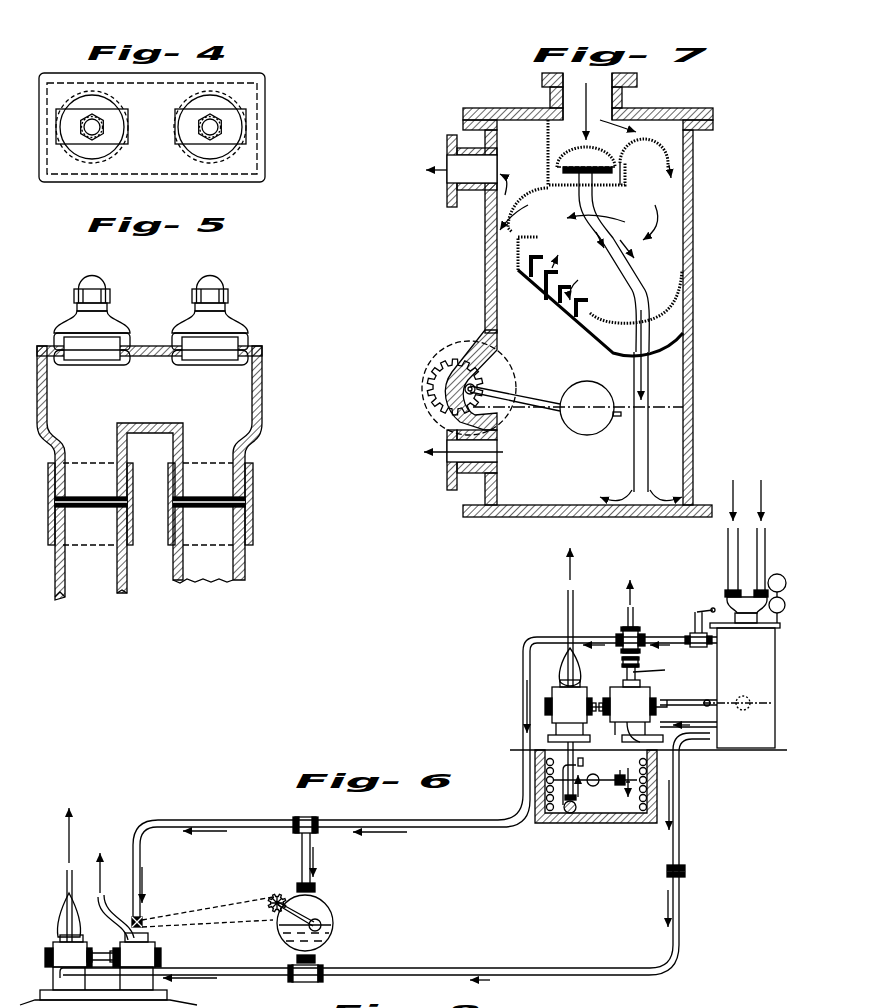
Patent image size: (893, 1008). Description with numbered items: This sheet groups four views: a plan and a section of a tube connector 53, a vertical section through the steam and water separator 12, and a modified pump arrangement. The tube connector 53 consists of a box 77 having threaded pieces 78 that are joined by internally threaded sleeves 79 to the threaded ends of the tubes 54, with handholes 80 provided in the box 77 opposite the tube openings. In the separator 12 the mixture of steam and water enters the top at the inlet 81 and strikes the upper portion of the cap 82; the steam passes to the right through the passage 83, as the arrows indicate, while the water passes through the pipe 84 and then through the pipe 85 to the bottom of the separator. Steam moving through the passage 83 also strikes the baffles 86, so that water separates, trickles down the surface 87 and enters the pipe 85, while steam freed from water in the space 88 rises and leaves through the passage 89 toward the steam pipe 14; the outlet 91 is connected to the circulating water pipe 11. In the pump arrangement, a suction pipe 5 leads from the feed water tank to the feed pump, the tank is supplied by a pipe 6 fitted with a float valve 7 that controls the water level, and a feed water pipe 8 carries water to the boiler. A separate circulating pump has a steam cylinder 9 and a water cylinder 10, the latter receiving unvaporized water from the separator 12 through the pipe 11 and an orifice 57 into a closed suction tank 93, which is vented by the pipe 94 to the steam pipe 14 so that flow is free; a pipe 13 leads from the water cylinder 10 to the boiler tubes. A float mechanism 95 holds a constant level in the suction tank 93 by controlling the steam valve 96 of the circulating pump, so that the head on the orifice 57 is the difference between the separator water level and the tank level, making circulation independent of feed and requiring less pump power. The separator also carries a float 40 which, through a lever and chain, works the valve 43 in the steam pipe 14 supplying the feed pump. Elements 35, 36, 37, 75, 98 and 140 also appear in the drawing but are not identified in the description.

In FIG. 6, the suction pipe 5 is at (570, 811).
In FIG. 6, the pipe 6 is at (665, 728).
In FIG. 6, the float valve 7 is at (606, 773).
In FIG. 6, the feed water pipe 8 is at (568, 617).
In FIG. 6, the steam cylinder 9 is at (147, 958).
In FIG. 6, the water cylinder 10 is at (53, 941).
In FIG. 6, the pipe 11 is at (385, 856).
In FIG. 7, the steam and water separator 12 is at (693, 261).
In FIG. 6, the steam and water separator 12 is at (744, 661).
In FIG. 6, the pipe 13 is at (67, 888).
In FIG. 6, the steam pipe 14 is at (484, 805).
In FIG. 6, the valve 35 is at (703, 607).
In FIG. 6, the valve 36 is at (634, 612).
In FIG. 6, the pipe 37 is at (762, 560).
In FIG. 6, the float 40 is at (751, 692).
In FIG. 6, the valve 43 is at (640, 663).
In FIG. 5, the tube connector 53 is at (166, 473).
In FIG. 5, the tubes 54 is at (175, 562).
In FIG. 6, the orifice 57 is at (686, 866).
In FIG. 6, the pipe 75 is at (728, 558).
In FIG. 5, the box 77 is at (149, 486).
In FIG. 5, the threaded pieces 78 is at (50, 477).
In FIG. 5, the internally threaded sleeves 79 is at (58, 517).
In FIG. 4, the handholes 80 is at (222, 130).
In FIG. 5, the handholes 80 is at (70, 342).
In FIG. 7, the top inlet 81 is at (573, 90).
In FIG. 7, the cap 82 is at (586, 152).
In FIG. 4, the passage 83 is at (258, 173).
In FIG. 7, the passage 83 is at (660, 143).
In FIG. 7, the pipe 84 is at (590, 219).
In FIG. 7, the pipe 85 is at (642, 378).
In FIG. 7, the baffles 86 is at (550, 272).
In FIG. 7, the surface 87 is at (540, 308).
In FIG. 7, the space 88 is at (634, 322).
In FIG. 7, the passage 89 is at (517, 253).
In FIG. 7, the outlet 91 is at (490, 444).
In FIG. 6, the suction tank 93 is at (320, 910).
In FIG. 6, the pipe 94 is at (308, 873).
In FIG. 6, the float mechanism 95 is at (275, 913).
In FIG. 6, the steam valve 96 is at (143, 919).
In FIG. 7, the inlet pipe 98 is at (488, 170).
In FIG. 7, the float arm 140 is at (552, 388).